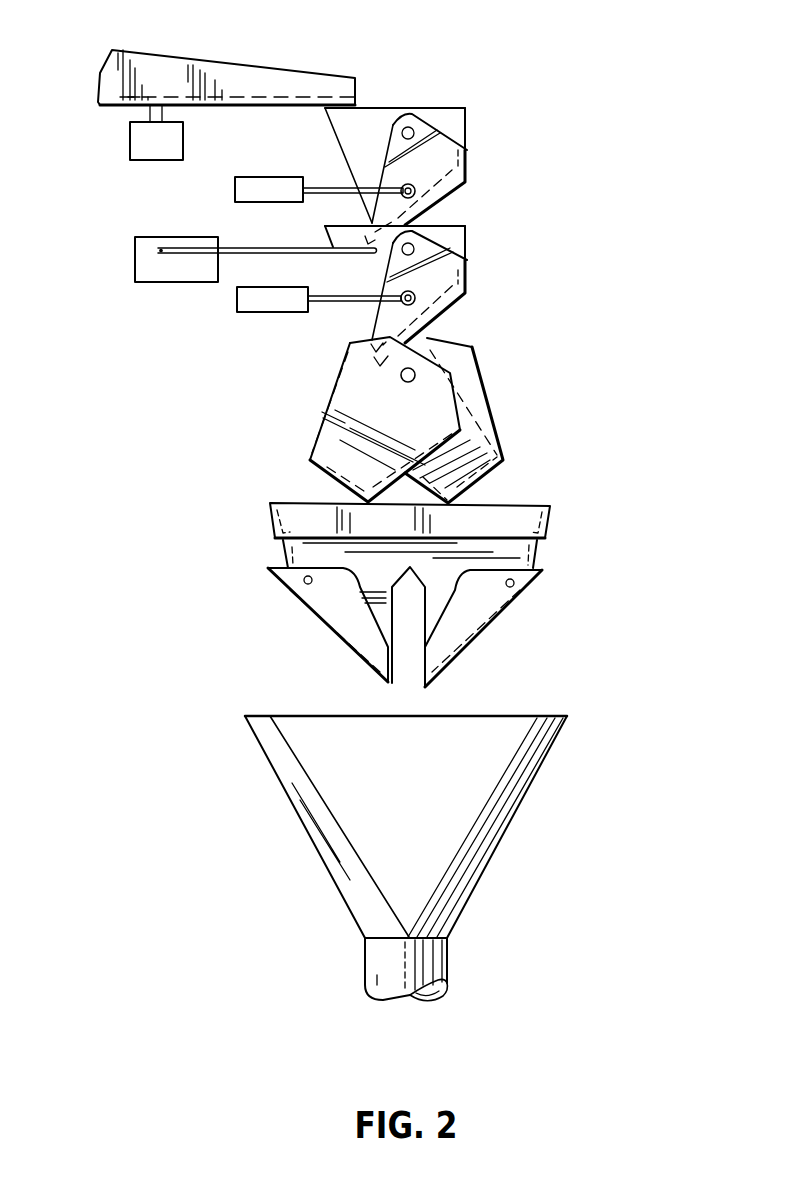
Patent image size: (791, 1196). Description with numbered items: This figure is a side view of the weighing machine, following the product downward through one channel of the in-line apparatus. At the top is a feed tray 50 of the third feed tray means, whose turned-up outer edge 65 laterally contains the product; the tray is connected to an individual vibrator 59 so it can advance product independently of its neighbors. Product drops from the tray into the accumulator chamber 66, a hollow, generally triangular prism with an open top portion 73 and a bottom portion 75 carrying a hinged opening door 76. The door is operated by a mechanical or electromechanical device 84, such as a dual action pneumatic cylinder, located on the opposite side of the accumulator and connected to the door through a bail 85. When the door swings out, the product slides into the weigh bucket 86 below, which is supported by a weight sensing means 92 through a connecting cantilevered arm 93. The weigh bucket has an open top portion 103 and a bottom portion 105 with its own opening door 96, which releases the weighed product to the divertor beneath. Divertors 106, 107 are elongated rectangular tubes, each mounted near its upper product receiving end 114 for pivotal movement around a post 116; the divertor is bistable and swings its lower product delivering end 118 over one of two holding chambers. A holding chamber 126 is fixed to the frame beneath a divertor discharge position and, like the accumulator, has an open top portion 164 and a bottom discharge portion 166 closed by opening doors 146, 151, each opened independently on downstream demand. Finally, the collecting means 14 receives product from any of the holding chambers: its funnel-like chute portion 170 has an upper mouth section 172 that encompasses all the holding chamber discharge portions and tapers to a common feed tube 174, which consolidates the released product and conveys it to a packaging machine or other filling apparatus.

The feed tray 50 is at (237, 63).
The outer edge 65 is at (283, 80).
The vibrator 59 is at (138, 135).
The top portion 73 is at (443, 107).
The accumulator chamber 66 is at (452, 125).
The opening door 76 is at (447, 162).
The bail 85 is at (340, 192).
The mechanical or electromechanical device 84 is at (235, 190).
The bottom portion 75 is at (372, 222).
The open top portion 103 is at (458, 225).
The weigh bucket 86 is at (453, 238).
The opening door 96 is at (445, 277).
The weight sensing means 92 is at (143, 265).
The cantilevered arm 93 is at (247, 253).
The bottom portion 105 is at (373, 307).
The upper end 114 is at (376, 357).
The post 116 is at (401, 375).
The divertor 106 is at (440, 383).
The divertor 107 is at (471, 410).
The lower end 118 is at (310, 455).
The holding chamber 126 is at (527, 510).
The open top portion 164 is at (548, 525).
The opening door 151 is at (338, 600).
The opening door 146 is at (480, 615).
The bottom discharge portion 166 is at (462, 670).
The collecting means 14 is at (548, 769).
The mouth section 172 is at (520, 727).
The funnel-like chute portion 170 is at (490, 822).
The common feed tube 174 is at (432, 961).